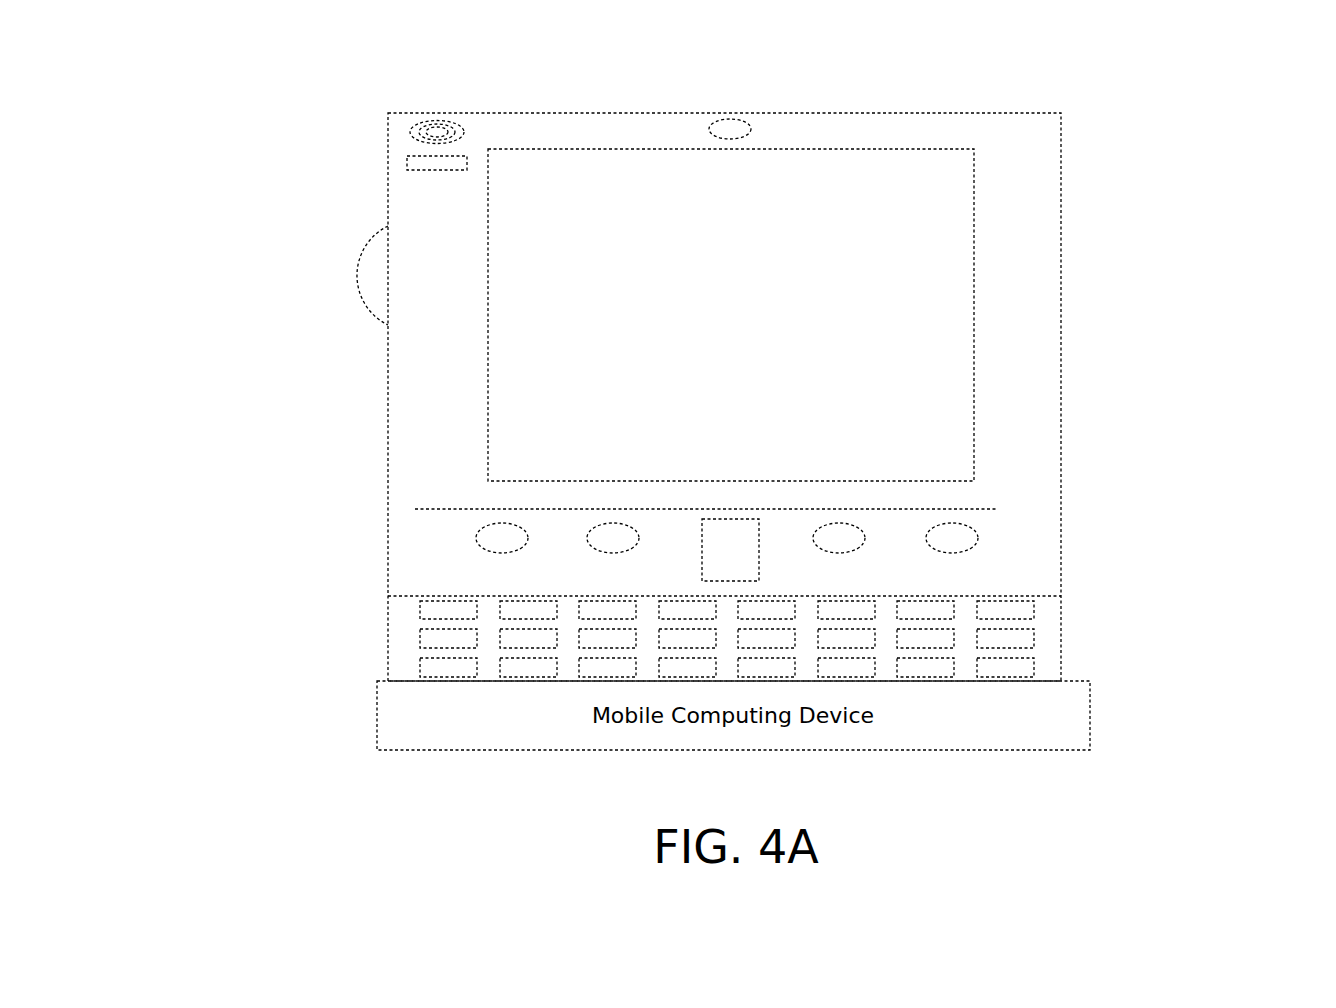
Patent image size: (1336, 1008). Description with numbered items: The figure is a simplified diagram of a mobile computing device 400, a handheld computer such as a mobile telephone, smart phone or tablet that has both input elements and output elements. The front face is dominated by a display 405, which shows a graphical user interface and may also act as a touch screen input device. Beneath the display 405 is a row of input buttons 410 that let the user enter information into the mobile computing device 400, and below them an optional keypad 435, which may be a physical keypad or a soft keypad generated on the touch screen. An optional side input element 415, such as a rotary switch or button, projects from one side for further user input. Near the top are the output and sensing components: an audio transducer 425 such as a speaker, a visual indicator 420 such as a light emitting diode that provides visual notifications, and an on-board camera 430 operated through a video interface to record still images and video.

The mobile computing device 400 is at (1047, 127).
The display 405 is at (638, 423).
The input buttons 410 is at (730, 553).
The side input element 415 is at (385, 275).
The visual indicator 420 is at (405, 166).
The audio transducer 425 is at (410, 132).
The on-board camera 430 is at (751, 129).
The keypad 435 is at (398, 670).